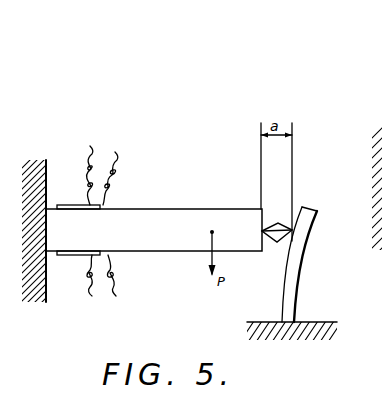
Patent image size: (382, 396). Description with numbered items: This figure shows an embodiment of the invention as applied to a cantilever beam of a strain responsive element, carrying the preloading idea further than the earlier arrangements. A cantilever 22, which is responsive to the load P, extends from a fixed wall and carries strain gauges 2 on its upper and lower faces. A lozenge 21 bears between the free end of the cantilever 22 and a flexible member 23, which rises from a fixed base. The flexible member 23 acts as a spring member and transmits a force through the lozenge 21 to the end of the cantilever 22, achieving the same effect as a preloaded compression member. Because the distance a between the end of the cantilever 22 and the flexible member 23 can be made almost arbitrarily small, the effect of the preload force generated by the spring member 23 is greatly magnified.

The strain gauge 2 is at (73, 204).
The lozenge 21 is at (278, 230).
The cantilever 22 is at (176, 208).
The flexible member 23 is at (293, 280).